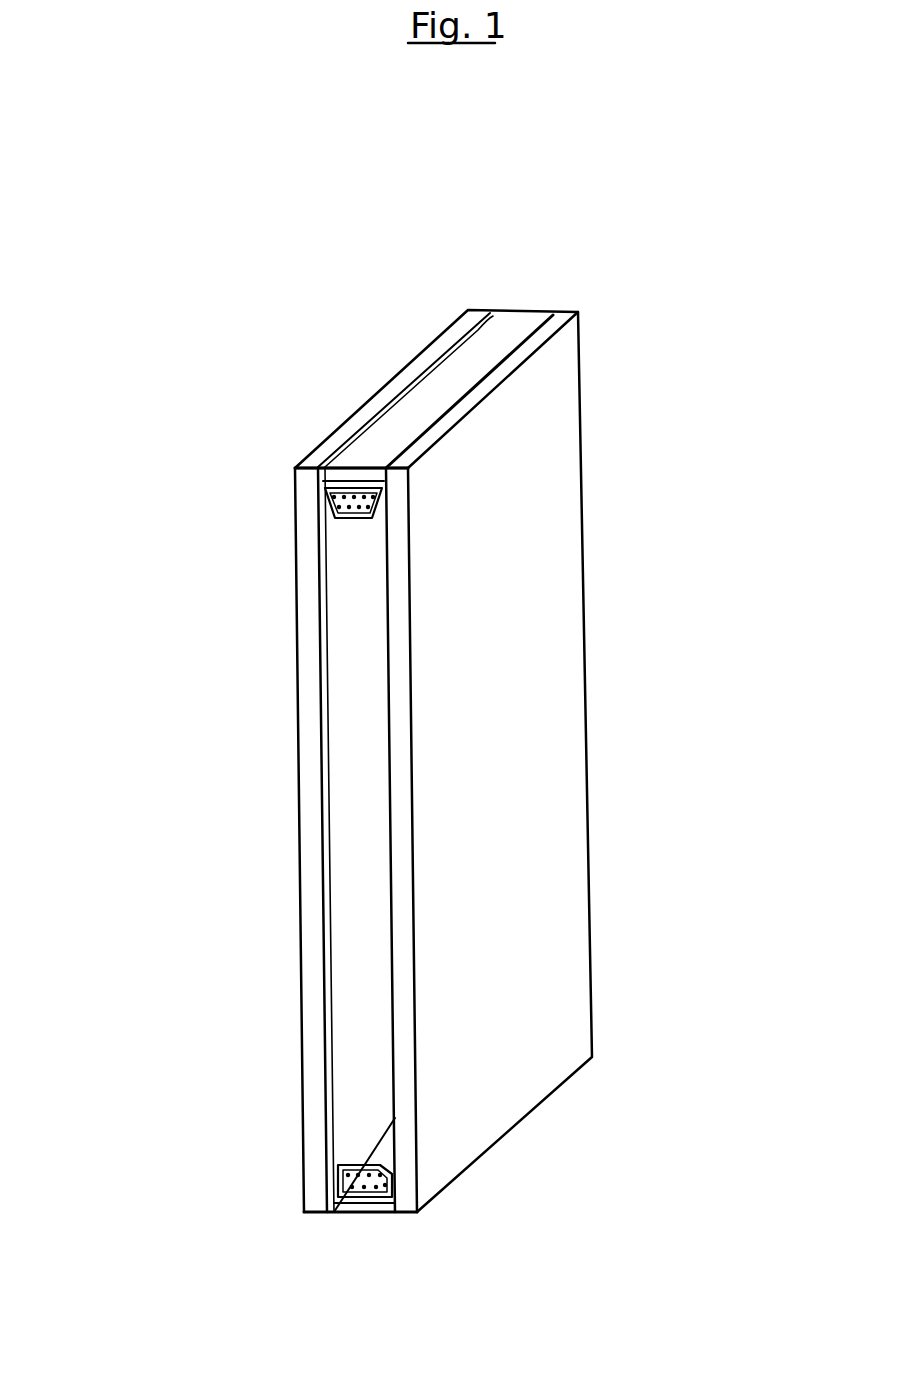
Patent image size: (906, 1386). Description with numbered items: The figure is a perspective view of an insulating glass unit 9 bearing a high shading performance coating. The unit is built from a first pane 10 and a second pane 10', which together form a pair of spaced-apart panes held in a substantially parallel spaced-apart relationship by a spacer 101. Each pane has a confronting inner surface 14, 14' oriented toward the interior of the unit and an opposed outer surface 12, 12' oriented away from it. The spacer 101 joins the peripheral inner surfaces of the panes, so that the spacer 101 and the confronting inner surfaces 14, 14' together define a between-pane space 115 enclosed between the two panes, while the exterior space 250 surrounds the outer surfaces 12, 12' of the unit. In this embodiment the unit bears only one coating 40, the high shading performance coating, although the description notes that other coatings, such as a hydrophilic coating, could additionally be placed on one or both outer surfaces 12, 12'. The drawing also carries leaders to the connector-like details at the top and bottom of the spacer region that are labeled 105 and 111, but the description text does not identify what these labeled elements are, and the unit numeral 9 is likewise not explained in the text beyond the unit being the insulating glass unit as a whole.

The planar assembly 9 is at (222, 222).
The first pane 10 is at (241, 840).
The outer surface 12 is at (312, 490).
The inner surface 14 is at (280, 840).
The coating 40 is at (327, 1070).
The second pane 10' is at (535, 840).
The outer surface 12' is at (492, 473).
The inner surface 14' is at (524, 865).
The spacer 101 is at (364, 526).
The connector housing 105 is at (370, 482).
The connector pin field 111 is at (360, 504).
The between-pane space 115 is at (348, 957).
The exterior space 250 is at (740, 980).